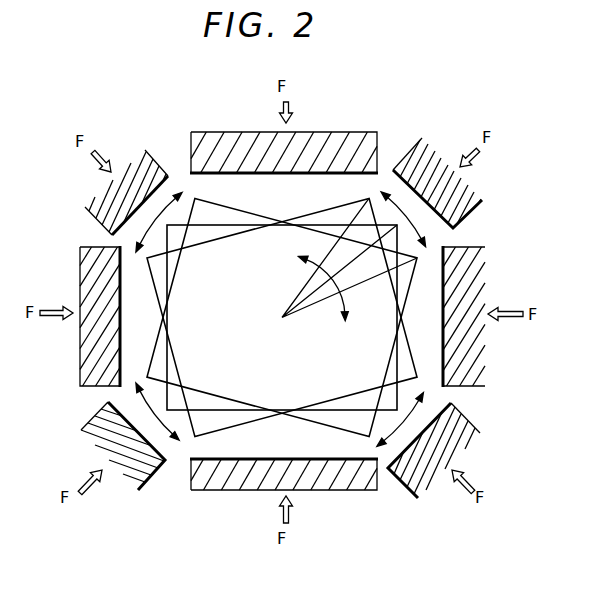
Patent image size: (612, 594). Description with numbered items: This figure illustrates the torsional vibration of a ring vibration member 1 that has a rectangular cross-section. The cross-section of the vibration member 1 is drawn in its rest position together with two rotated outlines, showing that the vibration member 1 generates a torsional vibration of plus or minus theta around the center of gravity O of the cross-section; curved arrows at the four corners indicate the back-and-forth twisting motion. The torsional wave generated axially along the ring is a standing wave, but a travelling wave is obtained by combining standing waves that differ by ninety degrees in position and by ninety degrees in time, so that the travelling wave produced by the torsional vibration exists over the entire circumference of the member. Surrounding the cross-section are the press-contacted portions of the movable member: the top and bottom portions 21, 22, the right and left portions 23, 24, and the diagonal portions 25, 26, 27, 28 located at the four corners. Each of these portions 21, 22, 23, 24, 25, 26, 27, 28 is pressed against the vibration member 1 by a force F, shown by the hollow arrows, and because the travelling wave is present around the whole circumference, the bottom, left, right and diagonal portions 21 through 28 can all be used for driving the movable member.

The vibration member 1 is at (386, 310).
The portion of the movable member 21 is at (340, 130).
The portion of the movable member 22 is at (330, 486).
The portion of the movable member 23 is at (485, 356).
The portion of the movable member 24 is at (80, 332).
The diagonal portion of the movable member 25 is at (468, 190).
The diagonal portion of the movable member 26 is at (462, 448).
The diagonal portion of the movable member 27 is at (122, 470).
The diagonal portion of the movable member 28 is at (143, 160).